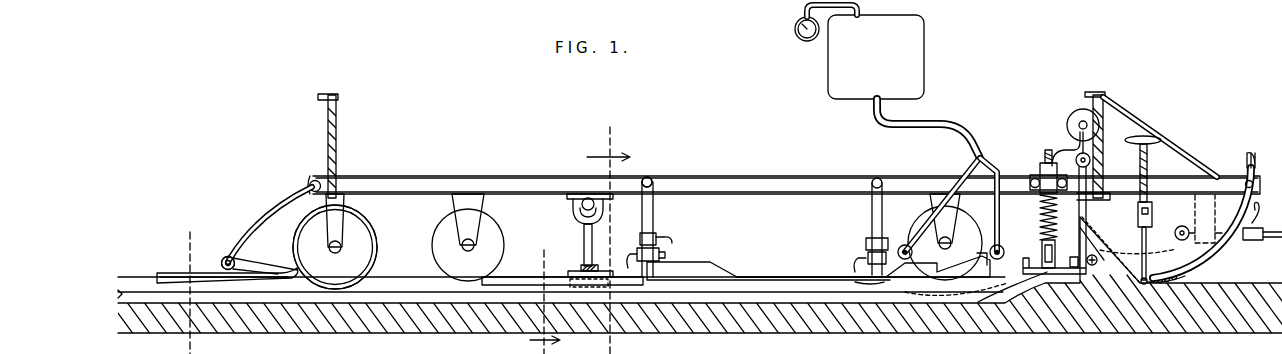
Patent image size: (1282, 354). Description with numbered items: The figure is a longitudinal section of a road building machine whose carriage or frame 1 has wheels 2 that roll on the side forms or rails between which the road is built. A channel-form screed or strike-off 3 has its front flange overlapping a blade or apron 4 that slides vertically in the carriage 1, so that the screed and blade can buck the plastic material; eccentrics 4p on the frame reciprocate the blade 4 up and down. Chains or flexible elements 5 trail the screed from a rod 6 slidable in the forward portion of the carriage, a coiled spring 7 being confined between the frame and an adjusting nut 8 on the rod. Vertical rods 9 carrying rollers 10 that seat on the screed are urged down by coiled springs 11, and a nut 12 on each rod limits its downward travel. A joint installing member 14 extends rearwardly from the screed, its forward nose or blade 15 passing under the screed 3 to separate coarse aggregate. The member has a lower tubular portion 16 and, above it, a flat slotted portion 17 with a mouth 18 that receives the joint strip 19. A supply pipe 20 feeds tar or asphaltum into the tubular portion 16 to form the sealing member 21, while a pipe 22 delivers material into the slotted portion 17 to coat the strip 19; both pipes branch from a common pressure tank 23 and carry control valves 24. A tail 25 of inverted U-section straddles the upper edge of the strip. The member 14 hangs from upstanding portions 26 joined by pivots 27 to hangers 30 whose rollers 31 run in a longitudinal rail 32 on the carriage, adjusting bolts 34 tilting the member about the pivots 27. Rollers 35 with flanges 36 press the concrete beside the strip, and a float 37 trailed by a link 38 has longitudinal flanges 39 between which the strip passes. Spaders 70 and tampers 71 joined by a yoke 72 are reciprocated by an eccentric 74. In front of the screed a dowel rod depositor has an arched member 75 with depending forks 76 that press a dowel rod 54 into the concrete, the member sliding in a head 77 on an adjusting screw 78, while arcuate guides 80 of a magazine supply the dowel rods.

The carriage bridge or frame 1 is at (313, 180).
The wheels 2 is at (974, 214).
The screed or strike-off 3 is at (1066, 282).
The blade or apron 4 is at (1117, 208).
The eccentrics 4p is at (1078, 119).
The chains or flexible elements 5 is at (1163, 224).
The rod 6 is at (1183, 240).
The coiled spring 7 is at (1192, 233).
The adjusting nut 8 is at (1250, 238).
The vertical rods 9 is at (1050, 150).
The roller 10 is at (1042, 256).
The coiled springs 11 is at (1040, 219).
The nut 12 is at (1040, 166).
The joint installing member 14 is at (781, 269).
The nose or blade 15 is at (1030, 300).
The lower longitudinal tubular portion 16 is at (853, 300).
The flat vertical slotted portion 17 is at (820, 286).
The mouth 18 is at (924, 280).
The strip 19 is at (403, 288).
The supply pipe or tube 20 is at (992, 163).
The sealing member 21 is at (647, 297).
The pipe or tube 22 is at (960, 167).
The pressure tank 23 is at (922, 80).
The control valves 24 is at (903, 245).
The tail 25 is at (553, 277).
The upstanding portions 26 is at (866, 274).
The pivots 27 is at (663, 255).
The hangers 30 is at (641, 226).
The rollers 31 is at (653, 185).
The longitudinal rail 32 is at (757, 178).
The adjusting bolts 34 is at (660, 237).
The rollers 35 is at (362, 236).
The flanges 36 is at (378, 250).
The float 37 is at (183, 272).
The link 38 is at (254, 232).
The longitudinal flanges 39 is at (157, 275).
The dowel rod 54 is at (1158, 283).
The spaders 70 is at (588, 290).
The tampers 71 is at (647, 280).
The arch or yoke 72 is at (596, 268).
The eccentric 74 is at (573, 209).
The arched member or yoke 75 is at (1166, 266).
The depending forks 76 is at (1142, 284).
The head 77 is at (1138, 236).
The adjusting screw 78 is at (1148, 157).
The arcuate channels or guides 80 is at (1247, 177).